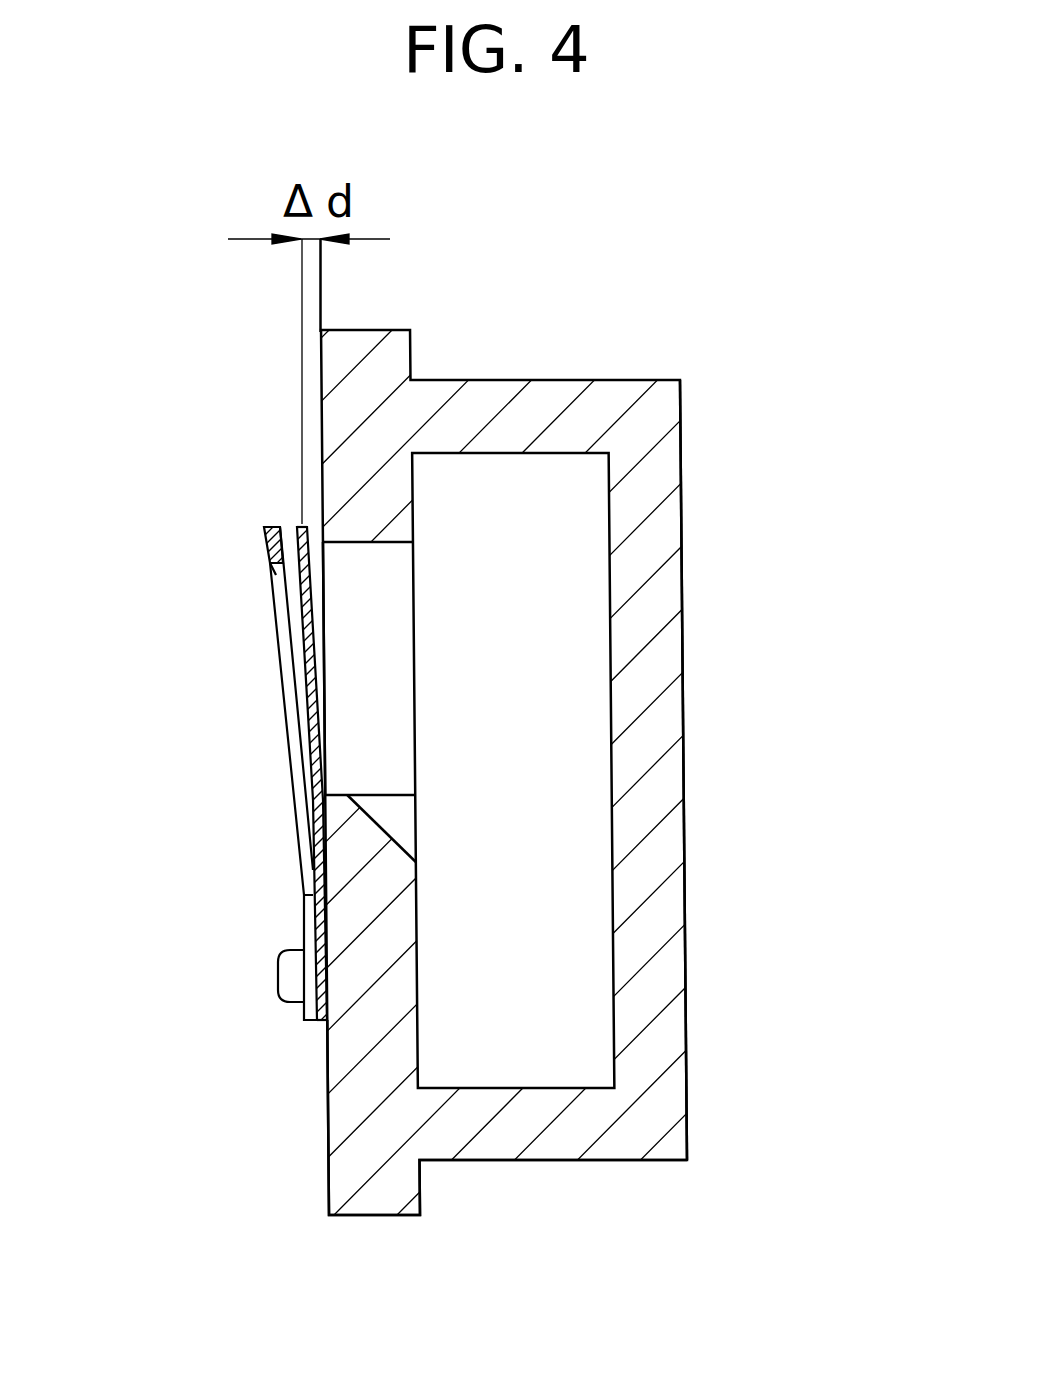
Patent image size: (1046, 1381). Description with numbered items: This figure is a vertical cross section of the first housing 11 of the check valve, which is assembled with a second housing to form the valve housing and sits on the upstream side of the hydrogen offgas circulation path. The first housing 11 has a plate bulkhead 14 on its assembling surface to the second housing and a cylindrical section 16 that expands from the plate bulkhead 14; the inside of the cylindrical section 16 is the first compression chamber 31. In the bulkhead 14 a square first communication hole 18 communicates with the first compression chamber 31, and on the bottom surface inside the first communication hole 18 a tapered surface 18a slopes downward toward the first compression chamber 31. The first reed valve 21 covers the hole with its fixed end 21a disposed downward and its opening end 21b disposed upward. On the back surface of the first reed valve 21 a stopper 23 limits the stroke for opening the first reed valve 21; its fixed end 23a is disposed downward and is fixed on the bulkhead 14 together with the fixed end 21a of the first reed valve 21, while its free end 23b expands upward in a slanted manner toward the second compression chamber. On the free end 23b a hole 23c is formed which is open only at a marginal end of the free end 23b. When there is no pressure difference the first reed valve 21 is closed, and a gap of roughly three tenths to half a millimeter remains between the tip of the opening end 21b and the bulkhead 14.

The first housing 11 is at (682, 580).
The plate bulkhead 14 is at (378, 1222).
The cylindrical section 16 is at (683, 815).
The first communication hole 18 is at (370, 543).
The tapered surface 18a is at (378, 827).
The first reed valve 21 is at (300, 681).
The fixed end 21a is at (327, 1025).
The opening end 21b is at (302, 522).
The stopper 23 is at (300, 907).
The fixed end 23a is at (303, 1017).
The free end 23b is at (263, 542).
The hole 23c is at (272, 580).
The first compression chamber 31 is at (547, 1065).